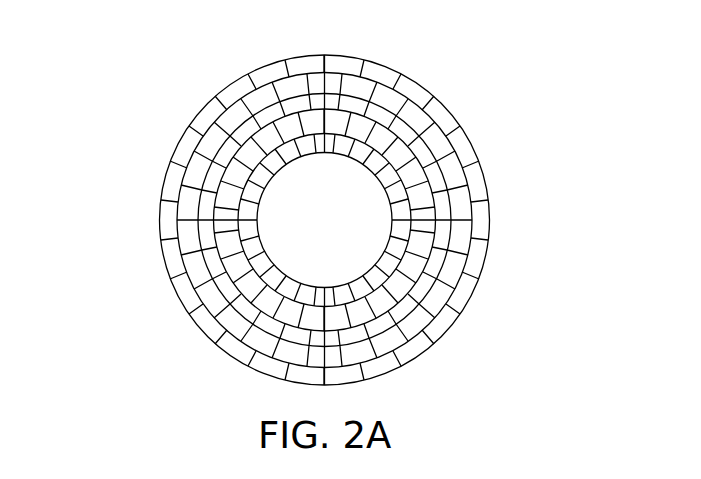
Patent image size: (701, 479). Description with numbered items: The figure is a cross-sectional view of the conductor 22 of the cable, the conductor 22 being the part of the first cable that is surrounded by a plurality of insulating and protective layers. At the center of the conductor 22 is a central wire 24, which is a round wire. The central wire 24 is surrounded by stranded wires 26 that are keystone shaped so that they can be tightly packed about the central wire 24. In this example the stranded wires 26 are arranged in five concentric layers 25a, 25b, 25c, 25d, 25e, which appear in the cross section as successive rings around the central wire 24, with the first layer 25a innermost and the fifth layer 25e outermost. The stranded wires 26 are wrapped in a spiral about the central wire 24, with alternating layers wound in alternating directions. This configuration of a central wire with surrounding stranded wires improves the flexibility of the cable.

The conductor 22 is at (505, 63).
The central wire 24 is at (290, 205).
The stranded wires 26 is at (233, 90).
The first layer of stranded wires 25a is at (397, 185).
The second layer of stranded wires 25b is at (432, 230).
The third layer of stranded wires 25c is at (432, 272).
The fourth layer of stranded wires 25d is at (430, 300).
The fifth layer of stranded wires 25e is at (440, 327).